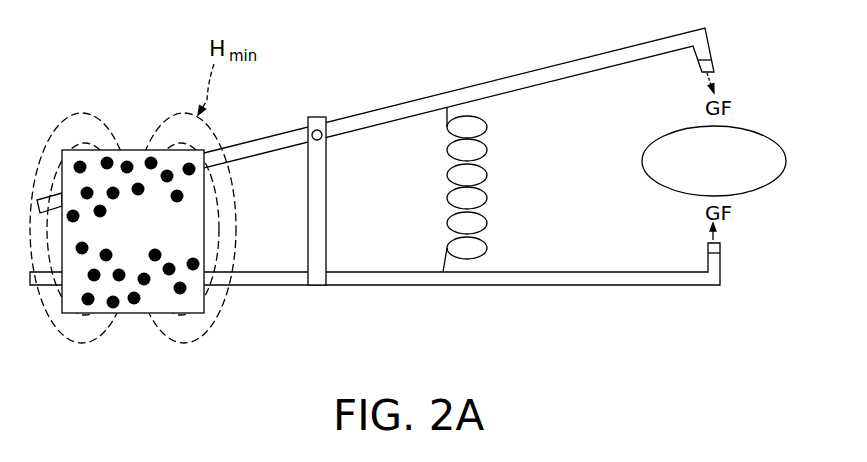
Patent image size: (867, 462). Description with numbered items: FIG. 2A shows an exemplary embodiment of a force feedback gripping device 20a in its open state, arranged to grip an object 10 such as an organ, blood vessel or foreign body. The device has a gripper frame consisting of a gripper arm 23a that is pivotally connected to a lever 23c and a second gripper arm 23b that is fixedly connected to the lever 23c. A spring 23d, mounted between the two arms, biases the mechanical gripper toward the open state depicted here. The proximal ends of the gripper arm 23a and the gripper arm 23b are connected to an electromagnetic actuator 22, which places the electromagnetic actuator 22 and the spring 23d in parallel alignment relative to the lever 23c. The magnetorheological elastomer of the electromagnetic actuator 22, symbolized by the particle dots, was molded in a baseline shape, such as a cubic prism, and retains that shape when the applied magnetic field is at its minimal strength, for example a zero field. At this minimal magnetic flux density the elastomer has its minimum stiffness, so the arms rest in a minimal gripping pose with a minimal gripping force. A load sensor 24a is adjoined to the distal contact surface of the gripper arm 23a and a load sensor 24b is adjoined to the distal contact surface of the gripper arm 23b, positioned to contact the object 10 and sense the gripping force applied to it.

The object 10 is at (753, 131).
The force feedback gripping device 20a is at (584, 139).
The electromagnetic actuator 22 is at (125, 150).
The gripper arm 23a is at (384, 108).
The gripper arm 23b is at (388, 286).
The lever 23c is at (327, 192).
The spring 23d is at (492, 218).
The load sensor 24a is at (712, 63).
The load sensor 24b is at (722, 248).